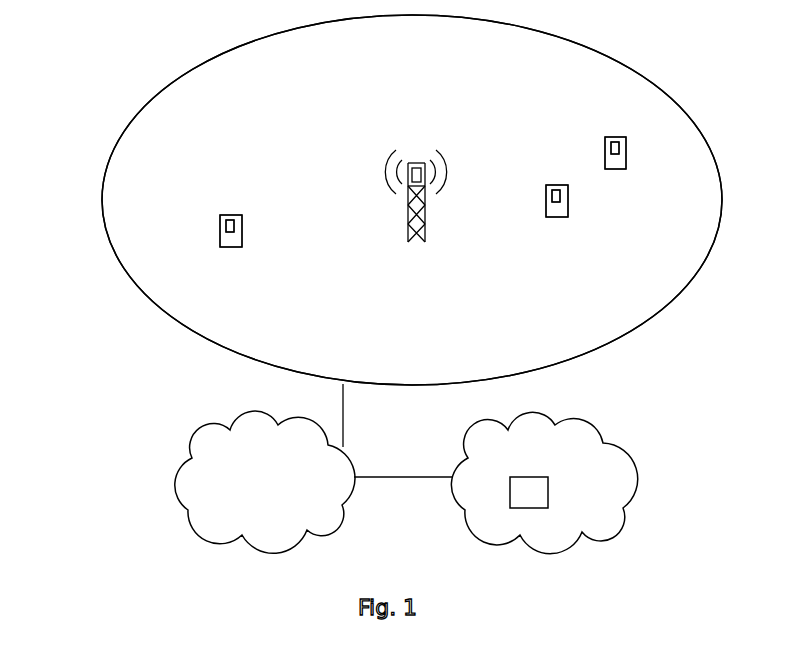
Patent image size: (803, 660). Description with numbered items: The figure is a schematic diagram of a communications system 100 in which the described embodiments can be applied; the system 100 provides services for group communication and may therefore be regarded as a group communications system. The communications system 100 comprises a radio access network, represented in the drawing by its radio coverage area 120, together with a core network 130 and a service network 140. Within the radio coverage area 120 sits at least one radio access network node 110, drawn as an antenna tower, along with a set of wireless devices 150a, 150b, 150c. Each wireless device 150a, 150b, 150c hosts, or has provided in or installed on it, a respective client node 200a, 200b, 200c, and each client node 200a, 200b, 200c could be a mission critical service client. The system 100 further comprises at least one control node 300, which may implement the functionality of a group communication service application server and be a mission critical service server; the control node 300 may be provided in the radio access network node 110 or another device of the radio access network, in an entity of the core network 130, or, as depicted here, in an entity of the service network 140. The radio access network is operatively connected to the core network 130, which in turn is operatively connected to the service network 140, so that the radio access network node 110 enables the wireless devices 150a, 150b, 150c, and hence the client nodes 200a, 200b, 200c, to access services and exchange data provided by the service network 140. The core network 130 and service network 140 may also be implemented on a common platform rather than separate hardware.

The communications system 100 is at (118, 64).
The radio access network node 110 is at (408, 229).
The radio coverage area 120 is at (178, 327).
The core network 130 is at (278, 488).
The service network 140 is at (535, 459).
The wireless device 150a is at (612, 169).
The wireless device 150b is at (548, 217).
The wireless device 150c is at (242, 232).
The client node 200a is at (611, 137).
The client node 200b is at (558, 217).
The client node 200c is at (228, 215).
The control node 300 is at (530, 495).